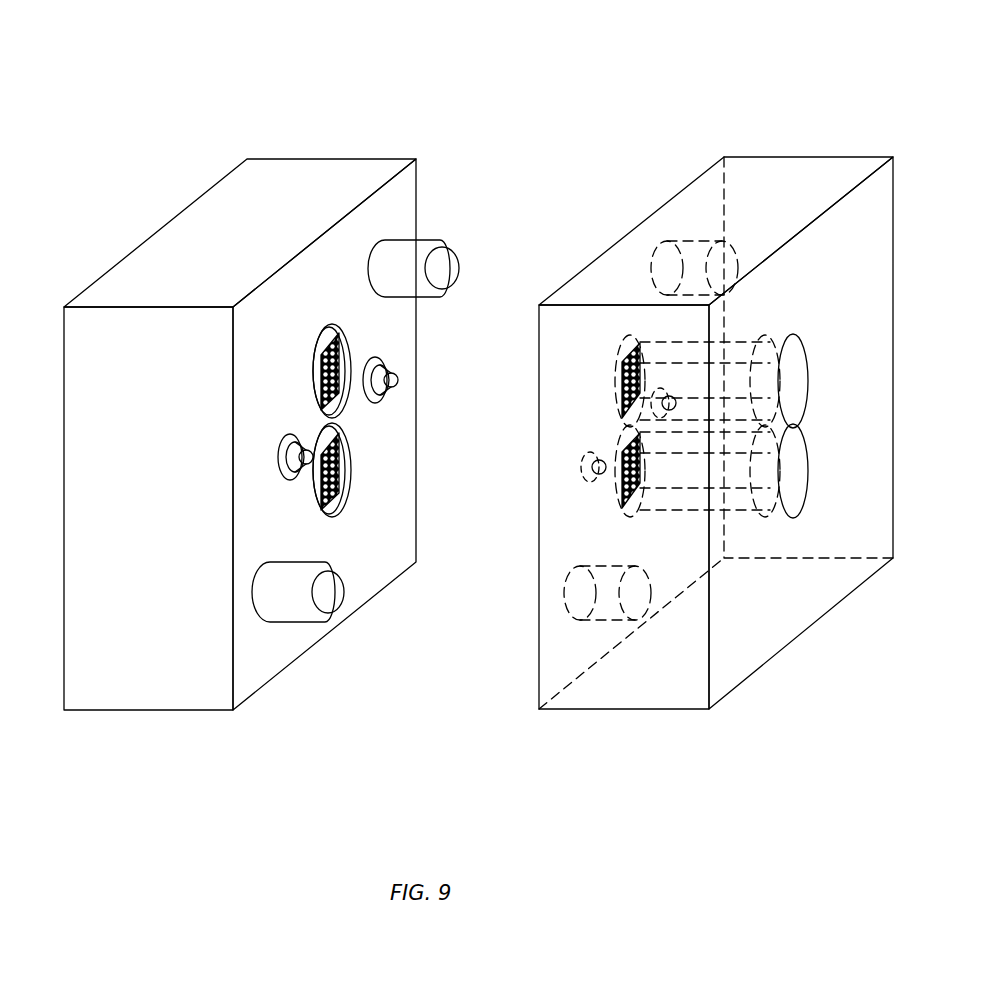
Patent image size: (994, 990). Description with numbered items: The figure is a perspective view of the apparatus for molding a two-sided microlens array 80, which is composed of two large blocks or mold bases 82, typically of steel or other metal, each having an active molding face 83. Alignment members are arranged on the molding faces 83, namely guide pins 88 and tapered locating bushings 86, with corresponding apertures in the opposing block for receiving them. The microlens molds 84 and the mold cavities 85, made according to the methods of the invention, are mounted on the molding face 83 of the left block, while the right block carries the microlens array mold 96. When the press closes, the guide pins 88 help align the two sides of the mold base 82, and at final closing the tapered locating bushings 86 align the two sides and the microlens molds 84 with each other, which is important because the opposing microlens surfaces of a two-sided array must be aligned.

The apparatus for molding a two-sided microlens array 80 is at (533, 46).
The mold bases 82 is at (563, 698).
The active molding face 83 is at (402, 213).
The microlens molds 84 is at (322, 440).
The mold cavities 85 is at (335, 406).
The tapered locating bushings 86 is at (385, 375).
The guide pins 88 is at (395, 265).
The microlens array mold 96 is at (795, 395).